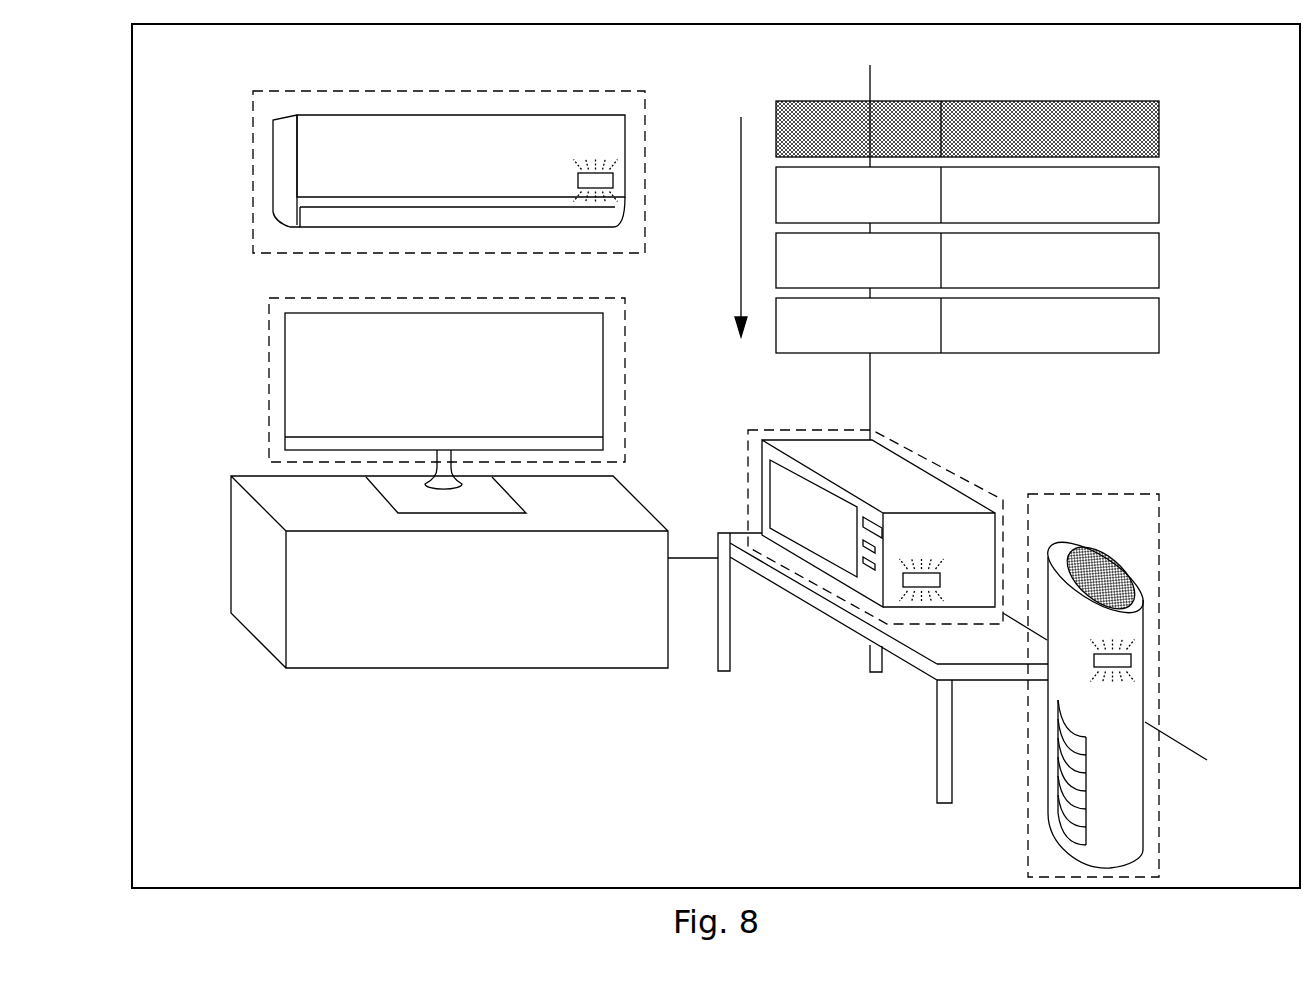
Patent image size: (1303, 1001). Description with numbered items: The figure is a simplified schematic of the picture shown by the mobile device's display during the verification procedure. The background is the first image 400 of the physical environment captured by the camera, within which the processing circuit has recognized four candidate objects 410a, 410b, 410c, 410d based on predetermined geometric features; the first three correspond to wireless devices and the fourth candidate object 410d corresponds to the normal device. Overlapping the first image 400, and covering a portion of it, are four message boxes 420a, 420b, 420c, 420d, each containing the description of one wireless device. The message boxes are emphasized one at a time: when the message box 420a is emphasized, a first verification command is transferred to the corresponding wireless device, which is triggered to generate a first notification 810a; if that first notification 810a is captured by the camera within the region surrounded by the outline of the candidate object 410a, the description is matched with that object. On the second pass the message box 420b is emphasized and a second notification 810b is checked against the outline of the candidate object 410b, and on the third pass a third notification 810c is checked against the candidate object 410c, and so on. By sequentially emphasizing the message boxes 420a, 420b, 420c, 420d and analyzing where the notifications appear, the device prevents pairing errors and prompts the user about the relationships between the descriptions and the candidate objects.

The first image 400 is at (132, 92).
The candidate object 410a is at (406, 172).
The candidate object 410b is at (881, 563).
The candidate object 410c is at (1153, 685).
The candidate object 410d is at (285, 367).
The message box 420a is at (1159, 138).
The message box 420b is at (1159, 207).
The message box 420c is at (1159, 270).
The message box 420d is at (1159, 335).
The first notification 810a is at (578, 176).
The second notification 810b is at (913, 588).
The third notification 810c is at (1131, 660).